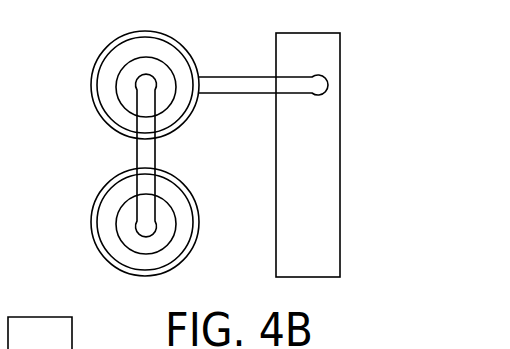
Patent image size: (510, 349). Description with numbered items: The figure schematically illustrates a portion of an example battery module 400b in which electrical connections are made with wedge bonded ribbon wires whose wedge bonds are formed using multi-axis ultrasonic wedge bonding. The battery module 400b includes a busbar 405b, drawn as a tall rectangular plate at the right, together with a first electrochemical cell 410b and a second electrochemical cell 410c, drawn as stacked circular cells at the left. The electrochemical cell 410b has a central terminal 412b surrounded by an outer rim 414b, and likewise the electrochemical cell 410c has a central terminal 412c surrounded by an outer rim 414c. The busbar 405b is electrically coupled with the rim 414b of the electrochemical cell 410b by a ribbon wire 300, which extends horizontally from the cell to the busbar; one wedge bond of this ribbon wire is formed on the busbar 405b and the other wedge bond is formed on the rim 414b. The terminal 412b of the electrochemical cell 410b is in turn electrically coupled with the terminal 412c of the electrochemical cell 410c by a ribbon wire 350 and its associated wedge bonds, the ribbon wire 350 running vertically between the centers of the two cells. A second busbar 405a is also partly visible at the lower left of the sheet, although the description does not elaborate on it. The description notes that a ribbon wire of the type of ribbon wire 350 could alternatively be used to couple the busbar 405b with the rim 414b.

The battery module 400b is at (413, 27).
The ribbon wire 300 is at (233, 77).
The ribbon wire 350 is at (137, 155).
The support plate 405a is at (40, 333).
The busbar 405b is at (332, 269).
The electrochemical cell 410b is at (88, 87).
The electrochemical cell 410c is at (88, 222).
The terminal 412b is at (152, 68).
The terminal 412c is at (138, 244).
The rim 414b is at (195, 118).
The rim 414c is at (186, 261).